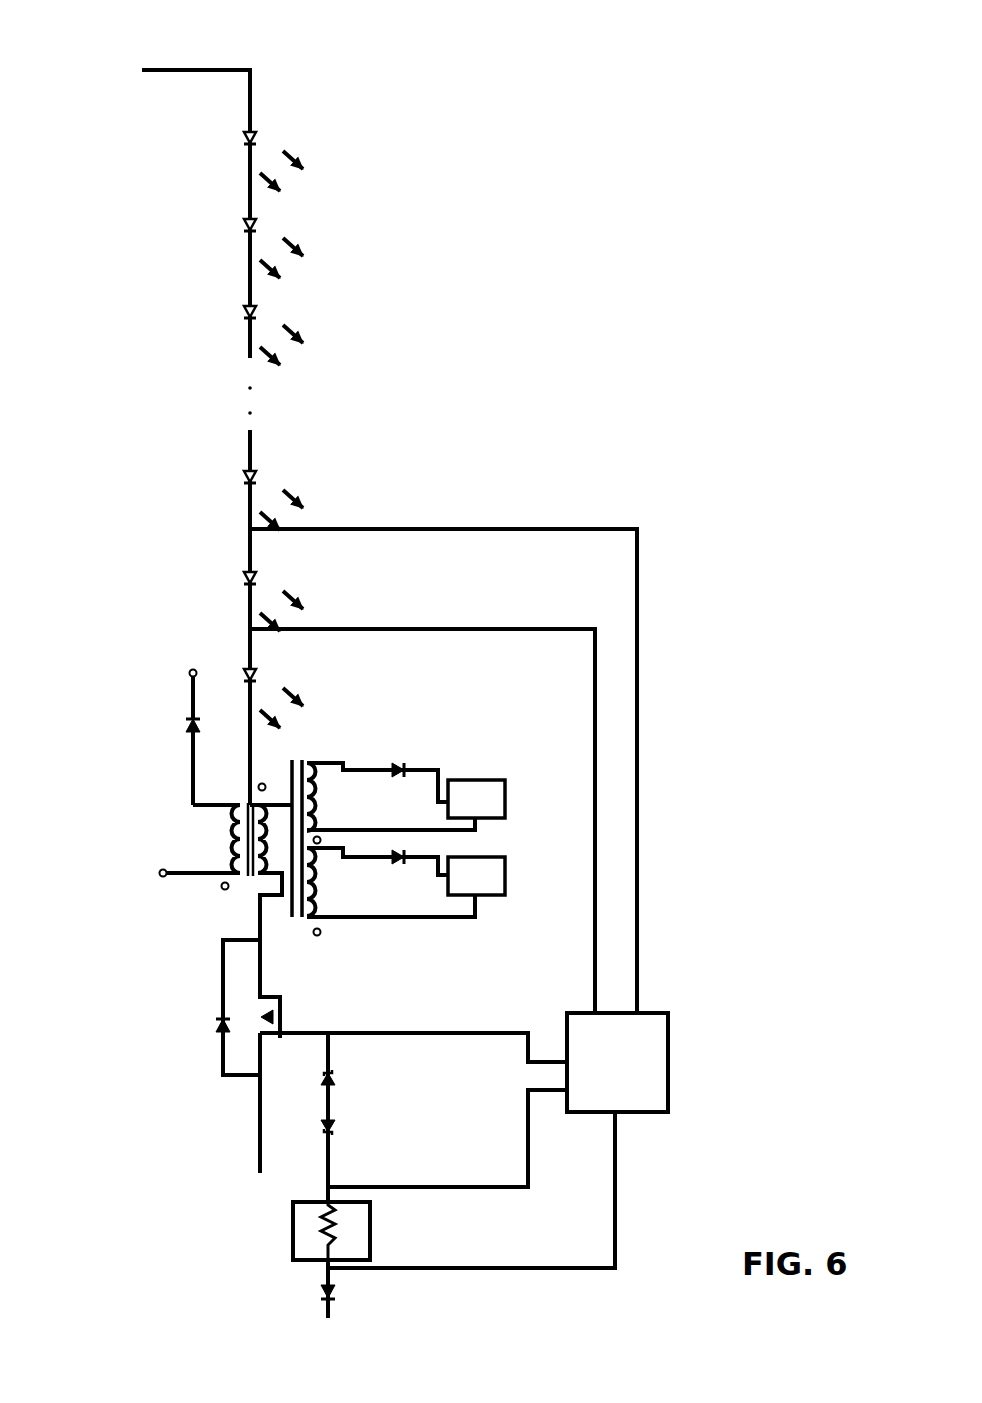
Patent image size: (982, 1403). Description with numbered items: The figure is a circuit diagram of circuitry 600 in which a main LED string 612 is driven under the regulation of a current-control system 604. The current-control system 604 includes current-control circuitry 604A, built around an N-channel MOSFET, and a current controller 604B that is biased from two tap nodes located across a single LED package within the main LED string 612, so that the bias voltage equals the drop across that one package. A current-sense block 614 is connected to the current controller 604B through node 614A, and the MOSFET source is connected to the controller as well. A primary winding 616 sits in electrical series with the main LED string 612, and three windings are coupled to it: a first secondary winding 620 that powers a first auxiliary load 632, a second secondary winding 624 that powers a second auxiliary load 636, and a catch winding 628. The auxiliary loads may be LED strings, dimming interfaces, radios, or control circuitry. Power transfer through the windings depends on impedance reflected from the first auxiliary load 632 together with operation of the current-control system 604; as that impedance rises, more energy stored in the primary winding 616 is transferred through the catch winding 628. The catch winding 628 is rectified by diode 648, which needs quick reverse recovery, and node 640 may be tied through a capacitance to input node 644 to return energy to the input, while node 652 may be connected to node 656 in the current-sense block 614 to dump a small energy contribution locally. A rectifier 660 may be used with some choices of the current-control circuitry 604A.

The circuitry 600 is at (531, 320).
The current-control system 604 is at (667, 876).
The current-control circuitry 604A is at (204, 1064).
The current controller 604B is at (617, 1062).
The main LED string 612 is at (281, 115).
The current-sense block 614 is at (292, 1212).
The node 614A is at (475, 1268).
The primary winding 616 is at (267, 878).
The first secondary winding 620 is at (299, 930).
The second secondary winding 624 is at (302, 738).
The catch winding 628 is at (237, 827).
The first auxiliary load 632 is at (406, 882).
The second auxiliary load 636 is at (406, 796).
The node 640 is at (193, 669).
The node 644 is at (167, 70).
The diode 648 is at (184, 720).
The node 652 is at (170, 868).
The node 656 is at (331, 1243).
The rectifier 660 is at (326, 1283).